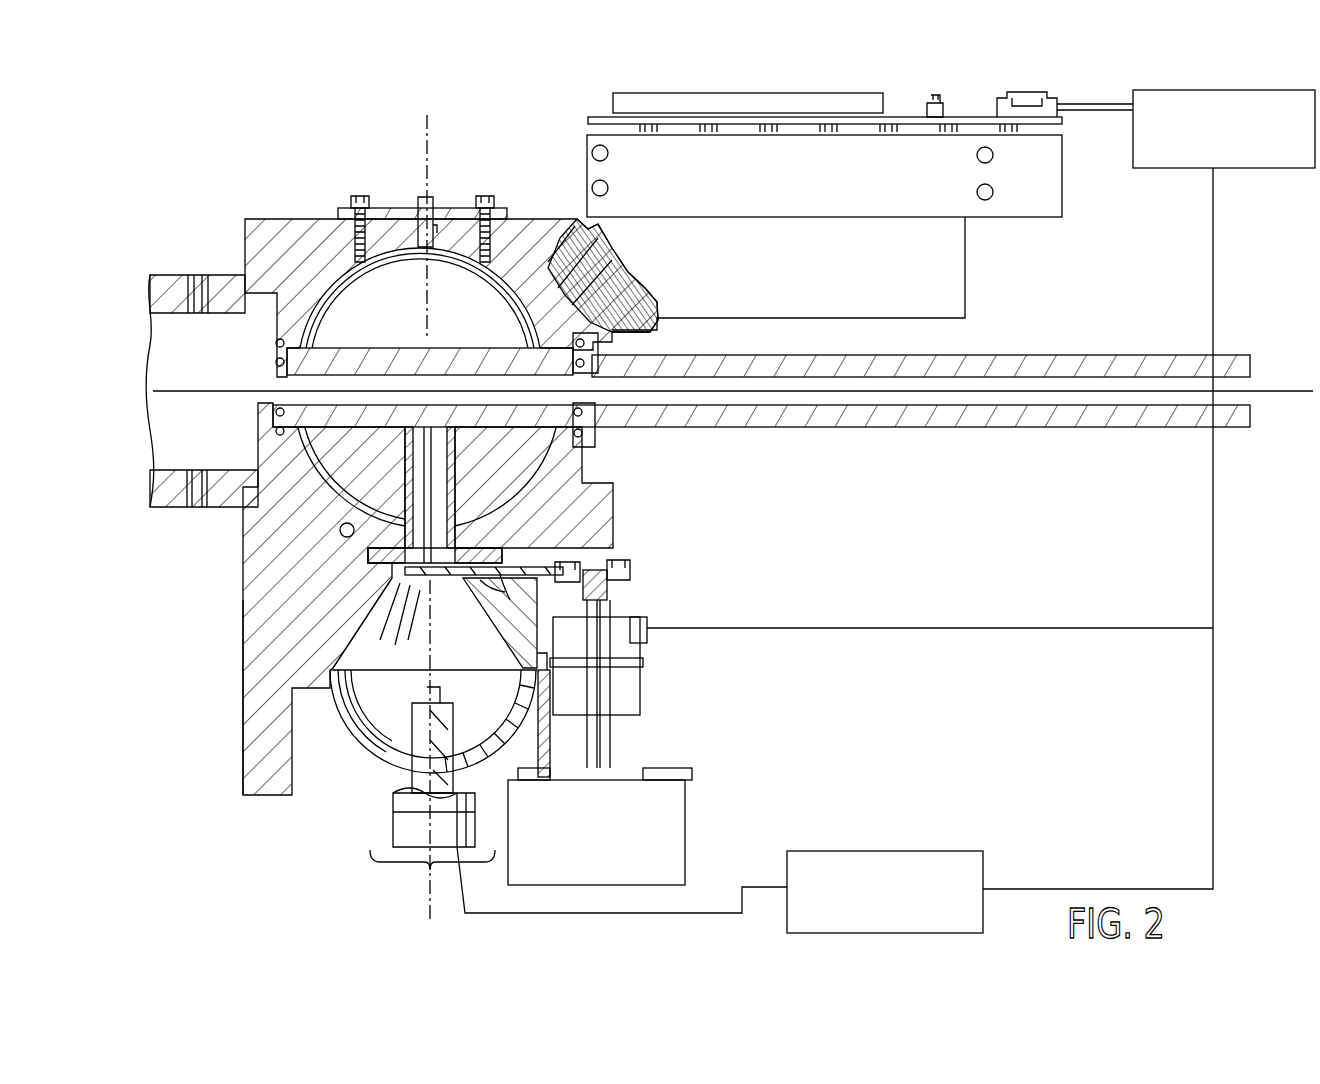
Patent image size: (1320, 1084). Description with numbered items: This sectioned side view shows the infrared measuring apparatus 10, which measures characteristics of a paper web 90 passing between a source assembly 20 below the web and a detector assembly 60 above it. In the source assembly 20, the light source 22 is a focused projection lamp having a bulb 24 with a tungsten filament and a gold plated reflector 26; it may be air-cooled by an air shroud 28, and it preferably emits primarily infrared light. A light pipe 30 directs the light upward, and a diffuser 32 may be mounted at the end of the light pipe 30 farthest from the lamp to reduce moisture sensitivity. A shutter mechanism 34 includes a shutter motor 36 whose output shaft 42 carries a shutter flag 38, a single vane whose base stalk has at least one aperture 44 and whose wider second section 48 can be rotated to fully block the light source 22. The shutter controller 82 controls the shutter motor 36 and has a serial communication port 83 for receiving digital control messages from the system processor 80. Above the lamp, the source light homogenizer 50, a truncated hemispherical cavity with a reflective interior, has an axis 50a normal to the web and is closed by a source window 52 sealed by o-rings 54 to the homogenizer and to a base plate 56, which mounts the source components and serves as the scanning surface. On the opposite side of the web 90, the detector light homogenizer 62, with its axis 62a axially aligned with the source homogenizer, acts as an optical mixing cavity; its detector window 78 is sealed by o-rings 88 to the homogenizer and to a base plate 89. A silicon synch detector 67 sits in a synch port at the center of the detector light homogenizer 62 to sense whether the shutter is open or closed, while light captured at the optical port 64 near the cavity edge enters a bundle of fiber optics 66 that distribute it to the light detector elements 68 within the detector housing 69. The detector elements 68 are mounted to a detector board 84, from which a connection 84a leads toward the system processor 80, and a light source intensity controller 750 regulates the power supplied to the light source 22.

The infrared measuring apparatus 10 is at (185, 205).
The source assembly 20 is at (272, 848).
The light source 22 is at (432, 844).
The bulb 24 is at (410, 760).
The reflector 26 is at (362, 728).
The air shroud 28 is at (243, 645).
The light pipe 30 is at (470, 532).
The diffuser 32 is at (456, 432).
The shutter mechanism 34 is at (736, 551).
The shutter motor 36 is at (688, 828).
The shutter flag 38 is at (576, 562).
The output shaft 42 is at (612, 744).
The aperture 44 is at (503, 588).
The second section 48 is at (386, 582).
The source light homogenizer 50 is at (258, 540).
The axis 50a is at (425, 898).
The source window 52 is at (262, 522).
The o-rings 54 is at (582, 434).
The base plate 56 is at (762, 428).
The detector assembly 60 is at (506, 162).
The detector light homogenizer 62 is at (333, 225).
The axis 62a is at (425, 128).
The optical port 64 is at (556, 235).
The fiber optics 66 is at (645, 270).
The silicon synch detector 67 is at (418, 196).
The light detector elements 68 is at (612, 100).
The detector housing 69 is at (1030, 218).
The detector window 78 is at (455, 352).
The system processor 80 is at (1252, 170).
The shutter controller 82 is at (632, 617).
The serial communication port 83 is at (658, 622).
The detector board 84 is at (928, 112).
The cable connector 84a is at (1060, 98).
The o-rings 88 is at (283, 358).
The base plate 89 is at (822, 363).
The paper web 90 is at (1263, 390).
The light source intensity controller 750 is at (920, 851).